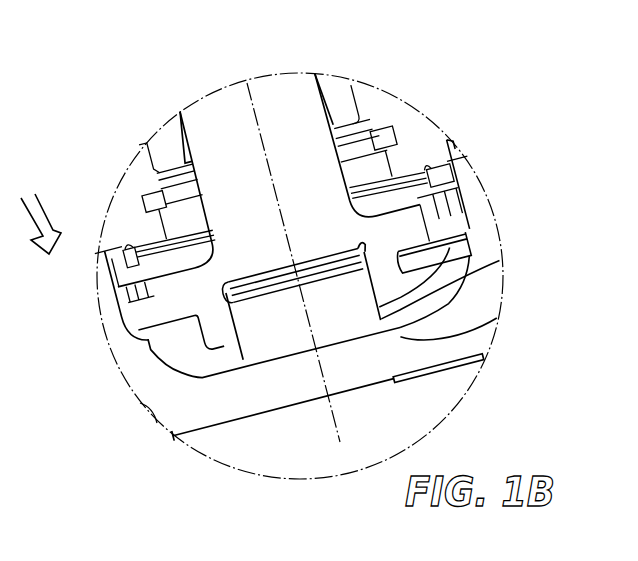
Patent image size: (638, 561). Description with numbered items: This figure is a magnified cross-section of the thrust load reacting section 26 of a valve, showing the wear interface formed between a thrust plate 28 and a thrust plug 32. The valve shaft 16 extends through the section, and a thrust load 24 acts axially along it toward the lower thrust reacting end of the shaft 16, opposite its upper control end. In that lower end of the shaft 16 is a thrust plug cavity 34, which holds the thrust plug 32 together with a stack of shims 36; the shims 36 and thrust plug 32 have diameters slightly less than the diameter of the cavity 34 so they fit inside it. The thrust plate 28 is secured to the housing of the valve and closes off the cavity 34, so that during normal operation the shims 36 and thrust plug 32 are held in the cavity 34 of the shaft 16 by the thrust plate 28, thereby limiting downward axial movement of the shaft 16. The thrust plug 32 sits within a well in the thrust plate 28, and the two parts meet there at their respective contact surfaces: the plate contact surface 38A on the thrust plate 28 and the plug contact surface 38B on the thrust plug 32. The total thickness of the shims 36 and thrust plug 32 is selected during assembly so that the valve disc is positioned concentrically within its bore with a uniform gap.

The valve shaft 16 is at (212, 107).
The thrust load 24 is at (40, 208).
The thrust load reacting section 26 is at (517, 192).
The thrust plate 28 is at (213, 392).
The thrust plug 32 is at (352, 290).
The thrust plug cavity 34 is at (225, 318).
The shims 36 is at (332, 262).
The plate contact surface 38A is at (498, 320).
The plug contact surface 38B is at (498, 262).